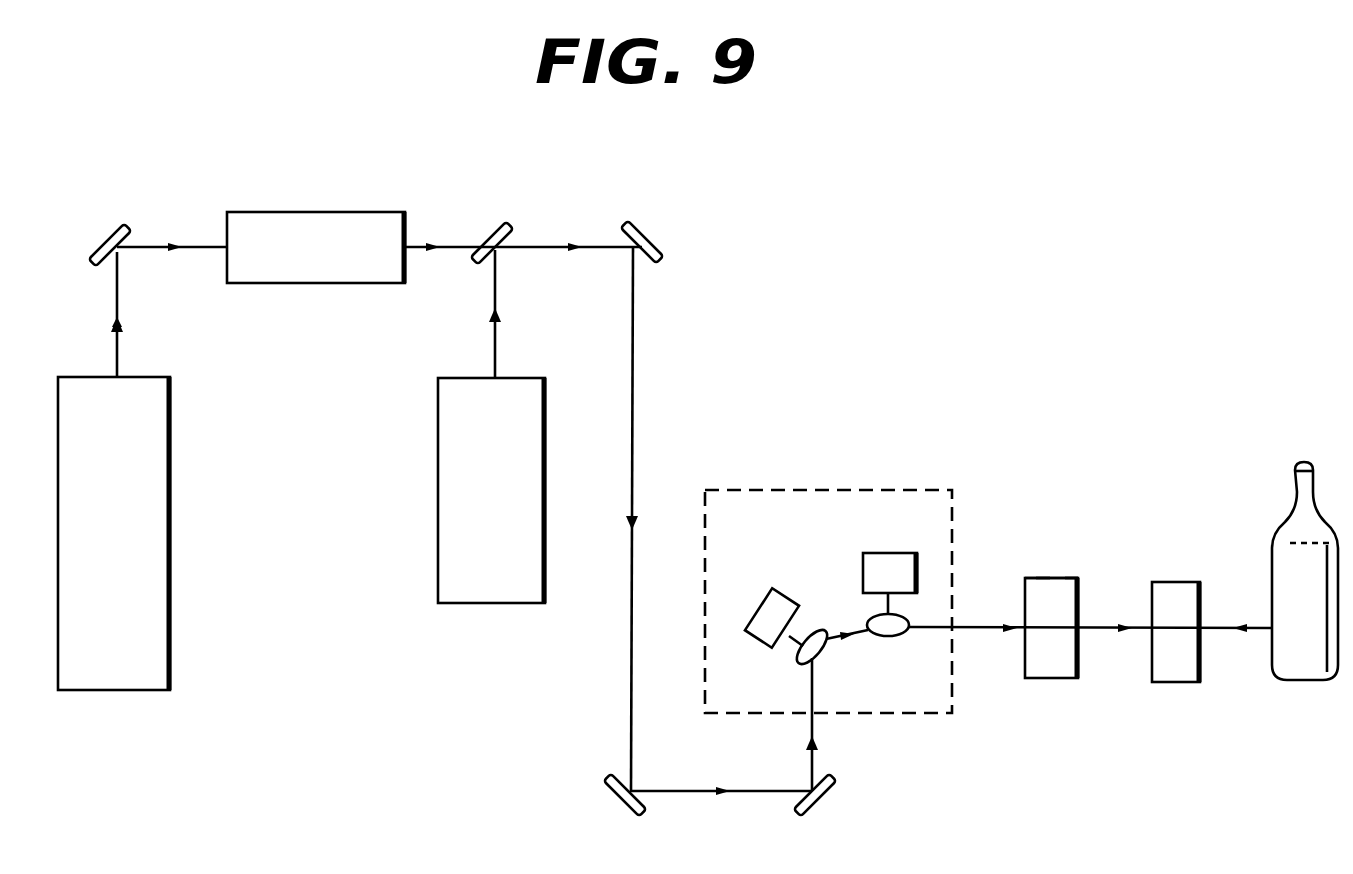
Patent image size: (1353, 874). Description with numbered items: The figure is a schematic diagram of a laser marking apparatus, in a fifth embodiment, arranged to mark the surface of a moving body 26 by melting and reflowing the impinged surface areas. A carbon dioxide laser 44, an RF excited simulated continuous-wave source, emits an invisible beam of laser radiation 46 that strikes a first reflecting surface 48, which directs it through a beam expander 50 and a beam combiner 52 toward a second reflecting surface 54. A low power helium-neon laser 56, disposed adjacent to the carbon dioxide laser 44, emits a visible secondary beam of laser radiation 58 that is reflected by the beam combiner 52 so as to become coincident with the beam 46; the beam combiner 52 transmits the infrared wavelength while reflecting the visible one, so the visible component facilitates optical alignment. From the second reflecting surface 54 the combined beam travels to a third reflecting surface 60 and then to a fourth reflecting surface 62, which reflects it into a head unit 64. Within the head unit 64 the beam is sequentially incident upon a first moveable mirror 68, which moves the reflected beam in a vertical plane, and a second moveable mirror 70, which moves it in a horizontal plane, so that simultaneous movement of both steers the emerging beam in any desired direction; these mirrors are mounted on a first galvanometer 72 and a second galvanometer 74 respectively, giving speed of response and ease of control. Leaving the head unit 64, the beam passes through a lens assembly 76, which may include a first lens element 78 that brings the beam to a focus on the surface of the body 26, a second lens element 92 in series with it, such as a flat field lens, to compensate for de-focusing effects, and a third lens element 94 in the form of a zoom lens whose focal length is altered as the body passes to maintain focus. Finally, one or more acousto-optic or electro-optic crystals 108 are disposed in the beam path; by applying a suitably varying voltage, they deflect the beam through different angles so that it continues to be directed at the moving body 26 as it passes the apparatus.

The moving body 26 is at (1300, 680).
The carbon dioxide laser 44 is at (157, 548).
The beam of laser radiation 46 is at (117, 350).
The first reflecting surface 48 is at (107, 238).
The beam expander 50 is at (312, 212).
The beam combiner 52 is at (490, 230).
The second reflecting surface 54 is at (648, 230).
The helium-neon laser 56 is at (442, 505).
The secondary beam of visible laser radiation 58 is at (495, 335).
The third reflecting surface 60 is at (620, 800).
The fourth reflecting surface 62 is at (814, 798).
The head unit 64 is at (877, 490).
The first moveable mirror 68 is at (800, 655).
The second moveable mirror 70 is at (885, 642).
The first galvanometer 72 is at (757, 608).
The second galvanometer 74 is at (877, 553).
The lens assembly 76 is at (1045, 678).
The first lens element 78 is at (1027, 577).
The second lens element 92 is at (1043, 578).
The third lens element 94 is at (1095, 557).
The acousto-optic or electro-optic crystals 108 is at (1175, 682).